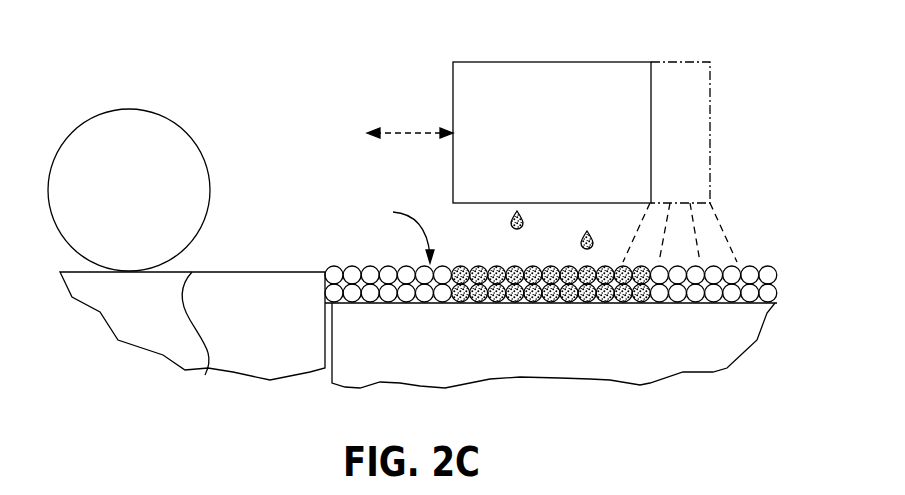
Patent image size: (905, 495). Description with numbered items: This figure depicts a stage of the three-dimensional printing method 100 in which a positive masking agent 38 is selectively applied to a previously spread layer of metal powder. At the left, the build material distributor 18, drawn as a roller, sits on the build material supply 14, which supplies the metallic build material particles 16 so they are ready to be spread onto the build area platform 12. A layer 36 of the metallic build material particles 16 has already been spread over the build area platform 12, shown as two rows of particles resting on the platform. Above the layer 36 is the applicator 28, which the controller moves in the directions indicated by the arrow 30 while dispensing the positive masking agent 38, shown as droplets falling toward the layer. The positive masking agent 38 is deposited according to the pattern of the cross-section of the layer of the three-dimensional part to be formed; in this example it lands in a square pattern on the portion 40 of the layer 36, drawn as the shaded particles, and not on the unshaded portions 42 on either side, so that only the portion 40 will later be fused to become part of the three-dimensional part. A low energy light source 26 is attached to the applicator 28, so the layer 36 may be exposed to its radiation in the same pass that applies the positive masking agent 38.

The 3D printing method 100 is at (187, 83).
The build material distributor 18 is at (207, 160).
The build material supply 14 is at (205, 375).
The build area platform 12 is at (623, 352).
The metallic build material particles 16 is at (558, 269).
The portions 42 is at (452, 307).
The portion 40 is at (640, 307).
The applicator 28 is at (552, 62).
The low energy light source 26 is at (712, 130).
The arrow 30 is at (400, 130).
The layer 36 is at (398, 232).
The positive masking agent 38 is at (580, 240).